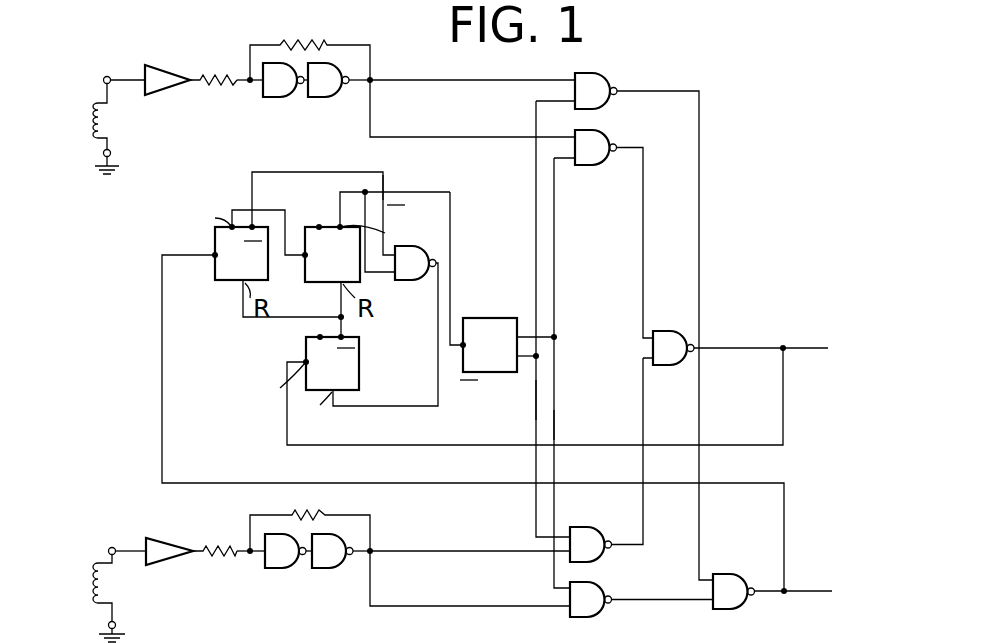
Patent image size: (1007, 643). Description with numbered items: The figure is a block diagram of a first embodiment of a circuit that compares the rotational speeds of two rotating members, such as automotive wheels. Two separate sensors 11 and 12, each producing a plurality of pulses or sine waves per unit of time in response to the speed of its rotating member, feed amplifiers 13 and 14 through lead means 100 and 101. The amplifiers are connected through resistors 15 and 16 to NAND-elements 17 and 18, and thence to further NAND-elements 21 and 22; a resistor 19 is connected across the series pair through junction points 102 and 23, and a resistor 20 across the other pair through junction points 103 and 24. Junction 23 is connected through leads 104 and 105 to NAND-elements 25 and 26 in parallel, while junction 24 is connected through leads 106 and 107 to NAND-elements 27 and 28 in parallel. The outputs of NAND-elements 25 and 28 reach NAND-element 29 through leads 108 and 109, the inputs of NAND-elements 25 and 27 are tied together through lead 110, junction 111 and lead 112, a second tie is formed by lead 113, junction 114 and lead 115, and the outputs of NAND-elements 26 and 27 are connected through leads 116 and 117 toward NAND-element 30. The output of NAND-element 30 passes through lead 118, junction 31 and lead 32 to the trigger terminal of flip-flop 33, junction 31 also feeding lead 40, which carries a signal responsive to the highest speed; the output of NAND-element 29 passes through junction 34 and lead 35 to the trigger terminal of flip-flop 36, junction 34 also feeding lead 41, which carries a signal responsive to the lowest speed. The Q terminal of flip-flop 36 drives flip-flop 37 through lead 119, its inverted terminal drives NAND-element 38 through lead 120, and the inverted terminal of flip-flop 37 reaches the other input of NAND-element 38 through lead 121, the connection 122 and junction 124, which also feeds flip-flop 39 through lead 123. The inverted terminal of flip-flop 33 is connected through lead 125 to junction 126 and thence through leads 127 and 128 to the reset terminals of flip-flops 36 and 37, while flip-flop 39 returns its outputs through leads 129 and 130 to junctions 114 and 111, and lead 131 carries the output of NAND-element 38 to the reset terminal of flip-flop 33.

The sensor 11 is at (103, 128).
The sensor 12 is at (90, 585).
The amplifier 13 is at (168, 75).
The amplifier 14 is at (165, 528).
The resistor 15 is at (212, 75).
The resistor 16 is at (230, 546).
The NAND-element 17 is at (279, 93).
The NAND-element 18 is at (288, 568).
The resistor 19 is at (309, 45).
The resistor 20 is at (330, 513).
The NAND-element 21 is at (333, 93).
The NAND-element 22 is at (335, 568).
The junction 23 is at (372, 79).
The junction 24 is at (373, 550).
The NAND-element 25 is at (597, 84).
The NAND-element 26 is at (598, 140).
The NAND-element 27 is at (584, 528).
The NAND-element 28 is at (600, 583).
The NAND-element 29 is at (722, 578).
The NAND-element 30 is at (668, 340).
The junction 31 is at (803, 322).
The lead 32 is at (496, 444).
The flip-flop 33 is at (360, 370).
The junction 34 is at (786, 594).
The lead 35 is at (428, 482).
The flip-flop 36 is at (224, 281).
The flip-flop 37 is at (320, 202).
The NAND-element 38 is at (410, 255).
The flip-flop 39 is at (480, 318).
The lead 40 is at (797, 350).
The lead 41 is at (820, 565).
The lead means 100 is at (129, 79).
The lead means 101 is at (130, 551).
The junction point 102 is at (250, 84).
The junction point 103 is at (250, 555).
The lead 104 is at (450, 80).
The lead 105 is at (435, 137).
The lead 106 is at (505, 550).
The lead 107 is at (485, 604).
The lead 108 is at (699, 268).
The lead 109 is at (649, 601).
The lead 110 is at (536, 207).
The junction 111 is at (538, 357).
The lead 112 is at (537, 395).
The lead 113 is at (554, 240).
The junction 114 is at (556, 336).
The lead 115 is at (555, 422).
The lead 116 is at (643, 243).
The lead 117 is at (643, 407).
The lead 118 is at (751, 346).
The lead 119 is at (284, 211).
The lead 120 is at (291, 172).
The lead 121 is at (383, 185).
The conductor 122 is at (383, 273).
The lead 123 is at (451, 248).
The junction 124 is at (366, 191).
The lead 125 is at (320, 330).
The junction 126 is at (342, 318).
The lead 127 is at (242, 318).
The lead 128 is at (340, 305).
The lead 129 is at (518, 336).
The lead 130 is at (517, 360).
The lead 131 is at (438, 398).